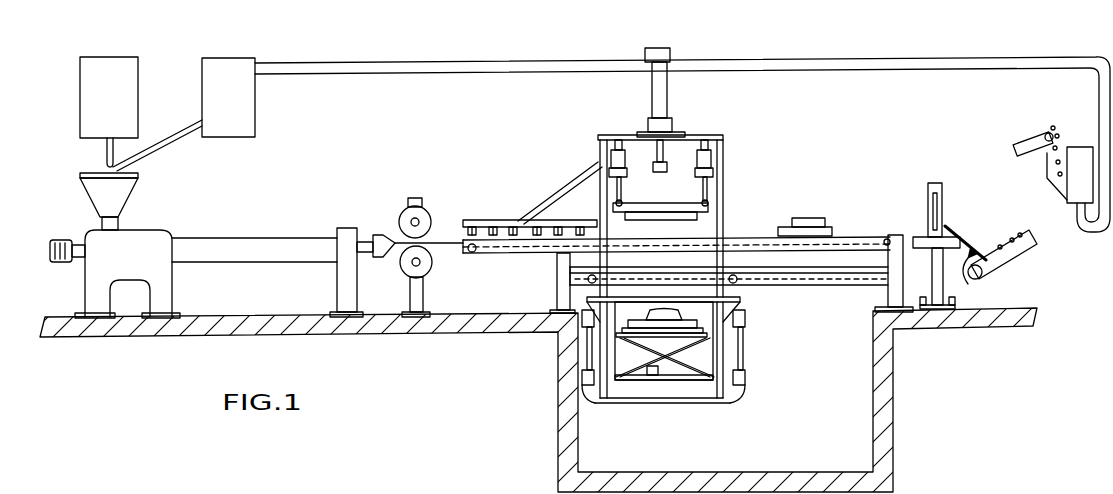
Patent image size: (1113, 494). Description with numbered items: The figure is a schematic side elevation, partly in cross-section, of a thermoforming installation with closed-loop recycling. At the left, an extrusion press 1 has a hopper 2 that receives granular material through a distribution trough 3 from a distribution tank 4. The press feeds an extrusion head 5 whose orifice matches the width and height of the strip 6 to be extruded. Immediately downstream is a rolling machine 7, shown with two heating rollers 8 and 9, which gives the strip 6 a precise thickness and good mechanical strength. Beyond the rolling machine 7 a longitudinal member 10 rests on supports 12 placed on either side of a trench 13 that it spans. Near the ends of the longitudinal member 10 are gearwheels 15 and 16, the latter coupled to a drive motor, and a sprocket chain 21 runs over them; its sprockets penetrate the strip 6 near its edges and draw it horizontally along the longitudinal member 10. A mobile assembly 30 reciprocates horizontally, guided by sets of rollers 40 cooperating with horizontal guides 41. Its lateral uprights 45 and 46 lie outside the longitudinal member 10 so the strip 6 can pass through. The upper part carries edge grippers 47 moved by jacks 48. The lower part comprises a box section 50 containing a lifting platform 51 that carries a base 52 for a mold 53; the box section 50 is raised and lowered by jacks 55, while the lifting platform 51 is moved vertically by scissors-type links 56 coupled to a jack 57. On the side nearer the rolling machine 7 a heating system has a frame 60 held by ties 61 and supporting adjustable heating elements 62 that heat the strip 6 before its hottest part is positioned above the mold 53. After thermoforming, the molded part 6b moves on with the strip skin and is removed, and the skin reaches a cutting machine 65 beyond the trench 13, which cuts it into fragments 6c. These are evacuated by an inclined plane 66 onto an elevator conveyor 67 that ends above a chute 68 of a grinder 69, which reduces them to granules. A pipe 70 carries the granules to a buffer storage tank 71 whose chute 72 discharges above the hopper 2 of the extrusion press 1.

The extrusion press 1 is at (181, 225).
The hopper 2 is at (120, 195).
The distribution trough 3 is at (105, 150).
The distribution tank 4 is at (135, 107).
The extrusion head 5 is at (380, 240).
The strip 6 is at (447, 242).
The molded part 6b is at (815, 218).
The fragments 6c is at (1020, 143).
The rolling machine 7 is at (424, 185).
The heating roller 8 is at (410, 218).
The heating roller 9 is at (430, 266).
The longitudinal member 10 is at (755, 240).
The supports 12 is at (565, 297).
The trench 13 is at (602, 443).
The gearwheel 15 is at (480, 240).
The gearwheel 16 is at (893, 233).
The sprocket chain 21 is at (855, 245).
The mobile assembly 30 is at (727, 133).
The rollers 40 is at (697, 277).
The horizontal guides 41 is at (827, 282).
The lateral upright 45 is at (598, 150).
The lateral upright 46 is at (727, 150).
The edge grippers 47 is at (645, 215).
The jacks 48 is at (619, 150).
The box section 50 is at (703, 410).
The lifting platform 51 is at (680, 340).
The base 52 is at (727, 327).
The mold 53 is at (668, 314).
The jacks 55 is at (590, 347).
The scissors-type links 56 is at (642, 347).
The jack 57 is at (655, 376).
The frame 60 is at (495, 222).
The ties 61 is at (565, 185).
The heating elements 62 is at (537, 253).
The cutting machine 65 is at (950, 183).
The inclined plane 66 is at (962, 258).
The elevator conveyor 67 is at (1037, 163).
The chute 68 is at (1048, 190).
The grinder 69 is at (1082, 160).
The pipe 70 is at (922, 63).
The buffer storage tank 71 is at (255, 112).
The chute 72 is at (177, 140).